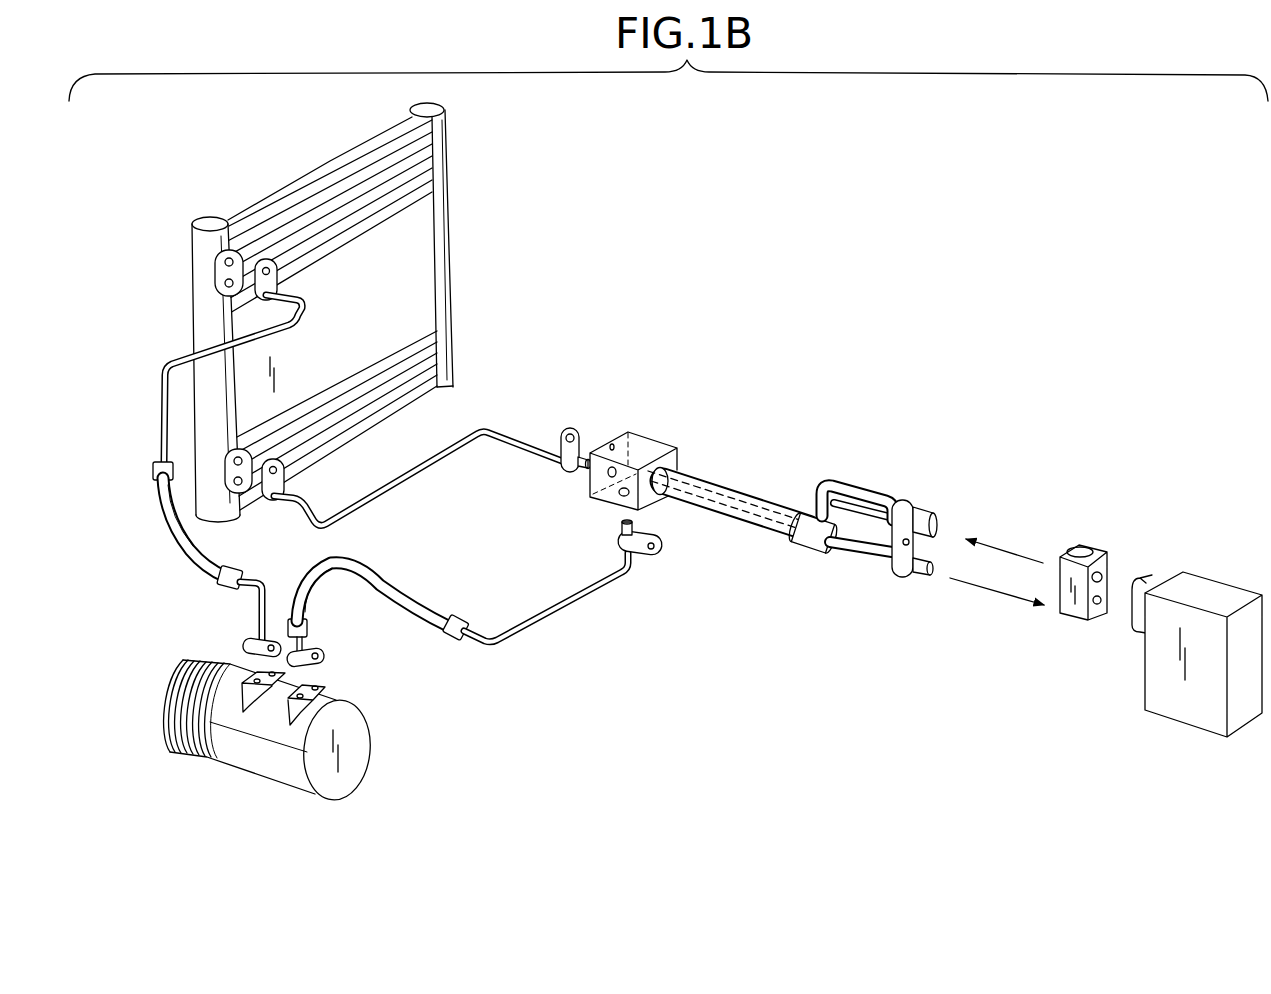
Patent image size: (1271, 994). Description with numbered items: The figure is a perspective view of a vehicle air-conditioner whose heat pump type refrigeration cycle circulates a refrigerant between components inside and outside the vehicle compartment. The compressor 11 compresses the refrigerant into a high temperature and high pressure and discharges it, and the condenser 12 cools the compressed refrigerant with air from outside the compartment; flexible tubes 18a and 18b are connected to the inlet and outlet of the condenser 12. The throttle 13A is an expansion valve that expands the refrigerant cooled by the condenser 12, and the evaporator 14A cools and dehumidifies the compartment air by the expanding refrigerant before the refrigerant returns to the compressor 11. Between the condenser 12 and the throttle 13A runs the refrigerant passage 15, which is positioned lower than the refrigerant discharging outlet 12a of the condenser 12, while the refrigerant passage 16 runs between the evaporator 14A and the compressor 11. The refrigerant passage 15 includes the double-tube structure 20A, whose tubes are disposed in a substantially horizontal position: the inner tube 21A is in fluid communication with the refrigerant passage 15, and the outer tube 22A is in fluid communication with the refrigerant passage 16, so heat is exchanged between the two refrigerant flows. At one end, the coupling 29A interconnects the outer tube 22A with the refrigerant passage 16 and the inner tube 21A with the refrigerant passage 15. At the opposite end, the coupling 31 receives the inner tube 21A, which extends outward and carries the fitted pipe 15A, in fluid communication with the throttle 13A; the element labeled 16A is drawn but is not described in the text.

The compressor 11 is at (249, 758).
The condenser 12 is at (318, 150).
The refrigerant discharging outlet 12a is at (270, 503).
The throttle 13A is at (1083, 542).
The evaporator 14A is at (1217, 580).
The refrigerant passage 15 is at (523, 432).
The pipe 15A is at (872, 575).
The refrigerant passage 16 is at (559, 608).
The low-pressure connecting pipe 16A is at (873, 482).
The flexible tube 18a is at (398, 582).
The flexible tube 18b is at (160, 543).
The double-tube structure 20A is at (762, 463).
The inner tube 21A is at (783, 536).
The outer tube 22A is at (718, 524).
The coupling 29A is at (650, 437).
The coupling 31 is at (822, 565).